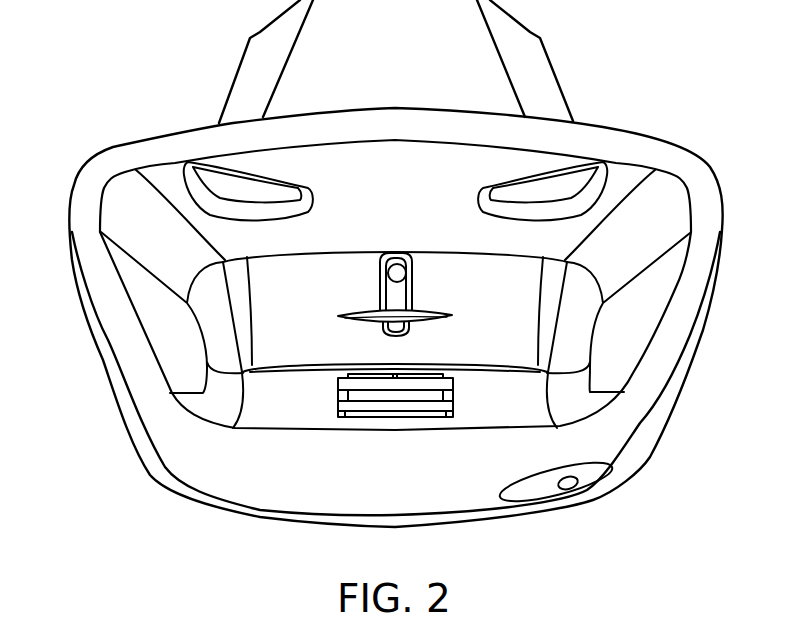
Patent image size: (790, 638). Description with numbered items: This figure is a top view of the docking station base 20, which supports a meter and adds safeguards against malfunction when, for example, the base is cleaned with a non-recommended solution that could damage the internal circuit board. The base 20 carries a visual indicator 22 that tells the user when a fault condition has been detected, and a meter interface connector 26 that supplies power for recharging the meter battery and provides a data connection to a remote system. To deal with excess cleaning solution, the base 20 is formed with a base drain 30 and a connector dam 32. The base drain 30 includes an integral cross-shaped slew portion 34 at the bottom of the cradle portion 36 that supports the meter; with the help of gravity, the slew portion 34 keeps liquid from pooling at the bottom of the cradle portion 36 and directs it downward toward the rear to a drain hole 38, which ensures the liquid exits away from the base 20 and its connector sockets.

The base 20 is at (82, 176).
The visual indicator 22 is at (568, 489).
The meter interface connector 26 is at (394, 425).
The base drain 30 is at (432, 272).
The connector dam 32 is at (418, 407).
The cross-shaped slew portion 34 is at (396, 304).
The cradle portion 36 is at (667, 188).
The drain hole 38 is at (397, 266).